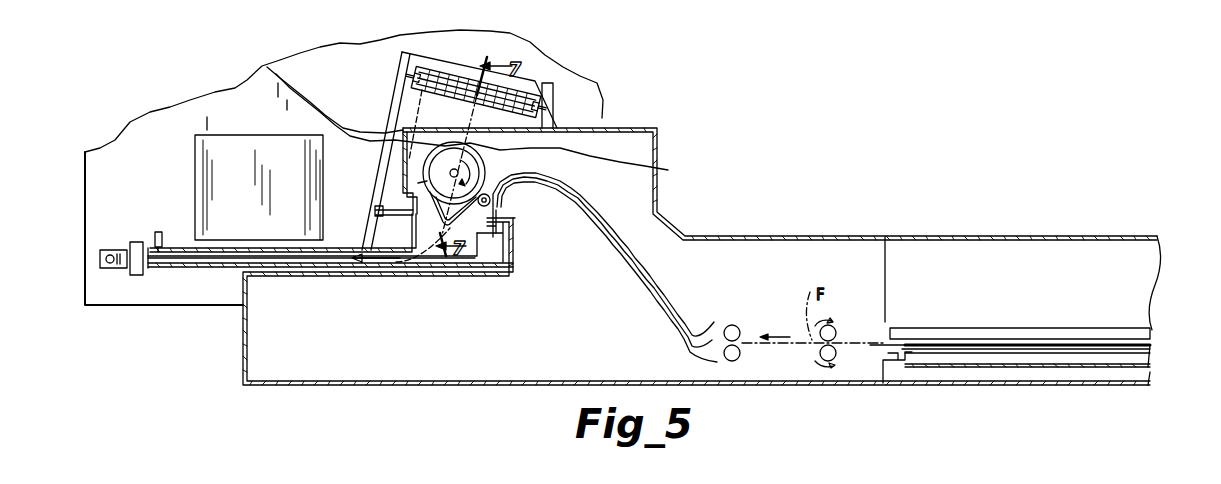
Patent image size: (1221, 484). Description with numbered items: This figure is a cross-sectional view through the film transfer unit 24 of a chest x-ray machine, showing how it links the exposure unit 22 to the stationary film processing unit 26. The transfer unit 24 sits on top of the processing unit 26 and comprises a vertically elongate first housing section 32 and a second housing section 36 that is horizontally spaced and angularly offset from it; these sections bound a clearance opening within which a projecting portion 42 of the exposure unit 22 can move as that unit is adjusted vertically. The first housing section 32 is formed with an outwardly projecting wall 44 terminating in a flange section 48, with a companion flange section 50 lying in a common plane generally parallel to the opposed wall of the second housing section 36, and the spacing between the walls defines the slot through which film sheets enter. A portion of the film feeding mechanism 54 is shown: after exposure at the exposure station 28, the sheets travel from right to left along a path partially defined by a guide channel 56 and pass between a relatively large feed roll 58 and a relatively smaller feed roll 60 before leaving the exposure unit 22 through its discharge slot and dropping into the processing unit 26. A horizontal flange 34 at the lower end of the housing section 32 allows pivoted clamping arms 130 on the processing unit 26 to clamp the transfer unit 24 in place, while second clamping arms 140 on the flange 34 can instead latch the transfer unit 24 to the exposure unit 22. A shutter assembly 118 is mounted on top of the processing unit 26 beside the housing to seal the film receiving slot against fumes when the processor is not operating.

The exposure unit 22 is at (765, 383).
The film transfer unit 24 is at (378, 162).
The film processing unit 26 is at (146, 187).
The exposure station 28 is at (1012, 370).
The first housing section 32 is at (175, 270).
The flange 34 is at (185, 247).
The second housing section 36 is at (566, 80).
The projecting portion 42 is at (392, 104).
The outwardly projecting wall 44 is at (517, 236).
The flange section 48 is at (493, 252).
The flange section 50 is at (377, 212).
The film feeding mechanism 54 is at (752, 329).
The guide channel 56 is at (662, 298).
The large feed roll 58 is at (498, 160).
The small feed roll 60 is at (491, 203).
The shutter assembly 118 is at (231, 135).
The clamping arm 130 is at (115, 270).
The second clamping arm 140 is at (157, 231).